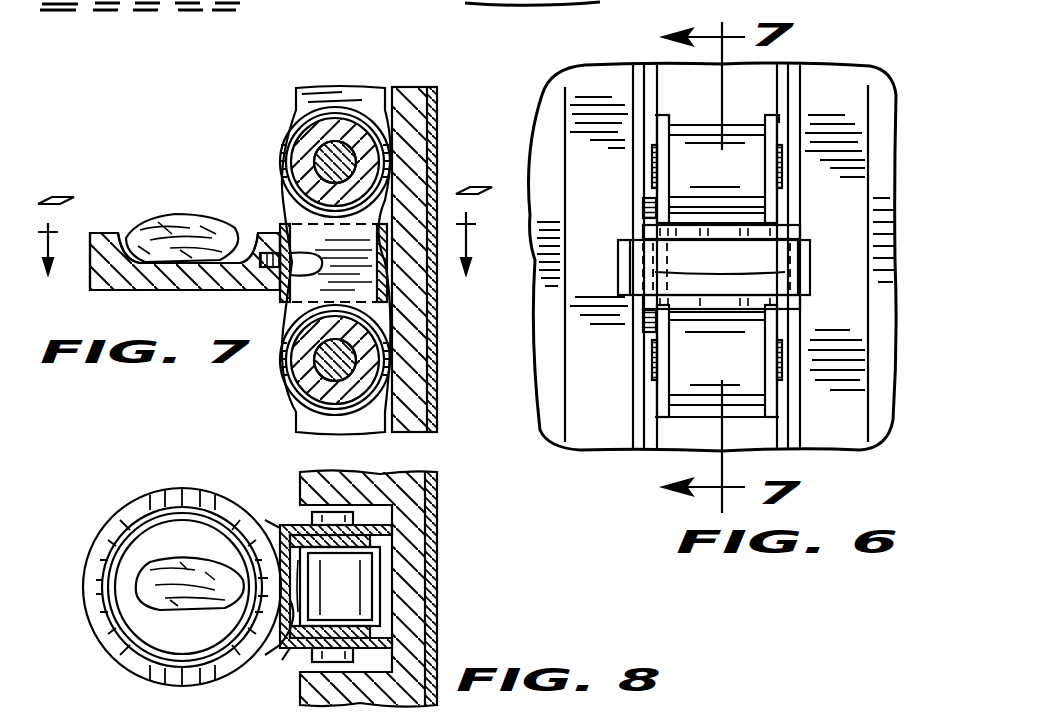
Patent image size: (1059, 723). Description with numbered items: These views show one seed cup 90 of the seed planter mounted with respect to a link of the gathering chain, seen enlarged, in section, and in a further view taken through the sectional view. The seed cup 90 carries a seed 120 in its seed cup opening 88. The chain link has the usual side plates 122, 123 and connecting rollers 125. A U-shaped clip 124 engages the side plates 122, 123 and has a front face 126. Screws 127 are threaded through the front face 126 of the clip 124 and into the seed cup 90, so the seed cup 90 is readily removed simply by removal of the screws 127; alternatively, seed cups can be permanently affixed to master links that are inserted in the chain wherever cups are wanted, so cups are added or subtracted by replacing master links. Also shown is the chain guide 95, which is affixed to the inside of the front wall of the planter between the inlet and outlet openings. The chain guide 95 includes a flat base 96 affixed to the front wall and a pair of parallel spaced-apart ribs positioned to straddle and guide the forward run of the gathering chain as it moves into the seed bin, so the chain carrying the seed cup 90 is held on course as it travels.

In FIG. 7, the seed cup opening 88 is at (248, 235).
In FIG. 8, the seed cup opening 88 is at (180, 538).
In FIG. 7, the seed cup 90 is at (126, 290).
In FIG. 8, the seed cup 90 is at (122, 505).
In FIG. 6, the seed cup 90 is at (735, 278).
In FIG. 6, the chain guide 95 is at (622, 406).
In FIG. 6, the flat base 96 is at (845, 413).
In FIG. 7, the seed 120 is at (172, 222).
In FIG. 8, the seed 120 is at (180, 597).
In FIG. 7, the side plate 122 is at (385, 200).
In FIG. 8, the side plate 122 is at (420, 660).
In FIG. 6, the side plate 122 is at (765, 200).
In FIG. 8, the side plate 123 is at (360, 520).
In FIG. 6, the side plate 123 is at (660, 177).
In FIG. 8, the U-shaped clip 124 is at (280, 524).
In FIG. 6, the U-shaped clip 124 is at (710, 305).
In FIG. 7, the connecting rollers 125 is at (318, 150).
In FIG. 6, the connecting rollers 125 is at (730, 140).
In FIG. 8, the front face 126 is at (270, 665).
In FIG. 7, the screws 127 is at (286, 290).
In FIG. 8, the screws 127 is at (320, 615).